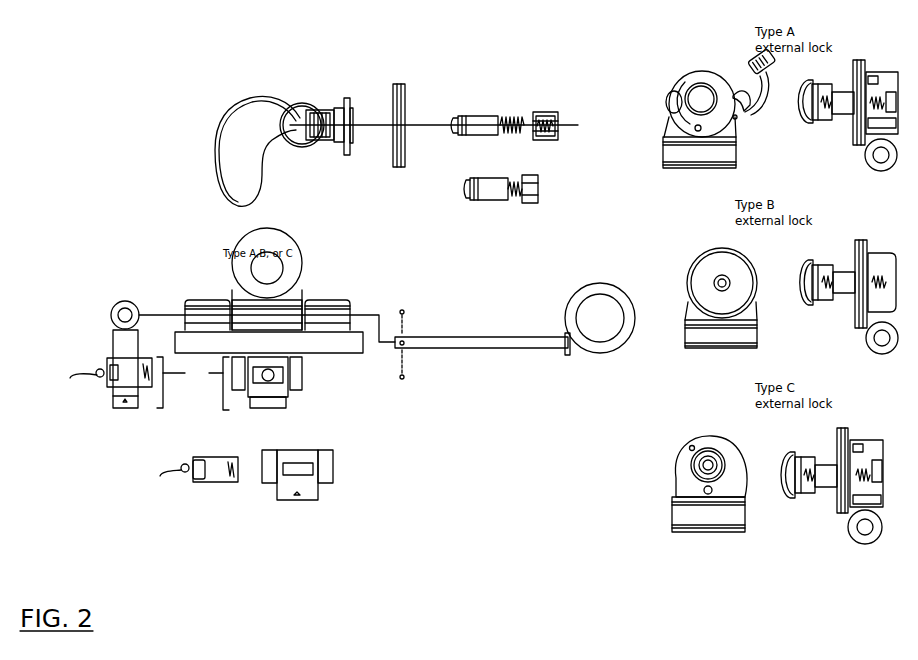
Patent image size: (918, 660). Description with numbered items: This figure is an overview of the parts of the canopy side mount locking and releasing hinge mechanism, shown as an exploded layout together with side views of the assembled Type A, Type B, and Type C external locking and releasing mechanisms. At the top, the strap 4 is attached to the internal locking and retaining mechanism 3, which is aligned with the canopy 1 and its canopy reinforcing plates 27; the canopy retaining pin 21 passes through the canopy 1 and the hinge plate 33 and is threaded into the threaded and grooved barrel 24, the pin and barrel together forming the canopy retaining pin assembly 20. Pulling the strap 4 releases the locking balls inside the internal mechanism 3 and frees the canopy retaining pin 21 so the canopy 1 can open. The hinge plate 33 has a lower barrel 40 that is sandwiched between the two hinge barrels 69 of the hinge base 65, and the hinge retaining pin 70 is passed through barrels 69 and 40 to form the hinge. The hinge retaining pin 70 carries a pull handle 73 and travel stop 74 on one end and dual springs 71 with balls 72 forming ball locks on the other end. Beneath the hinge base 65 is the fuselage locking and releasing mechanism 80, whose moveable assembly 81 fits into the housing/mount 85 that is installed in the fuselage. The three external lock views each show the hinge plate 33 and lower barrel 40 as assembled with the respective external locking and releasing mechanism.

The canopy 1 is at (400, 84).
The internal locking and retaining mechanism 3 is at (348, 83).
The strap 4 is at (233, 127).
The canopy retaining pin assembly 20 is at (545, 212).
The canopy retaining pin 21 is at (523, 97).
The threaded and grooved barrel 24 is at (558, 107).
The canopy reinforcing plates 27 is at (396, 84).
The hinge plate 33 is at (670, 131).
The lower barrel 40 is at (676, 164).
The hinge base 65 is at (312, 343).
The hinge barrels 69 is at (127, 300).
The hinge retaining pin 70 is at (477, 340).
The springs 71 is at (407, 312).
The balls 72 is at (402, 309).
The pull handle 73 is at (603, 284).
The travel stop 74 is at (565, 333).
The fuselage locking and releasing mechanism 80 is at (186, 370).
The assembly 81 is at (240, 448).
The fuselage locking and releasing mechanism housing/mount 85 is at (337, 448).